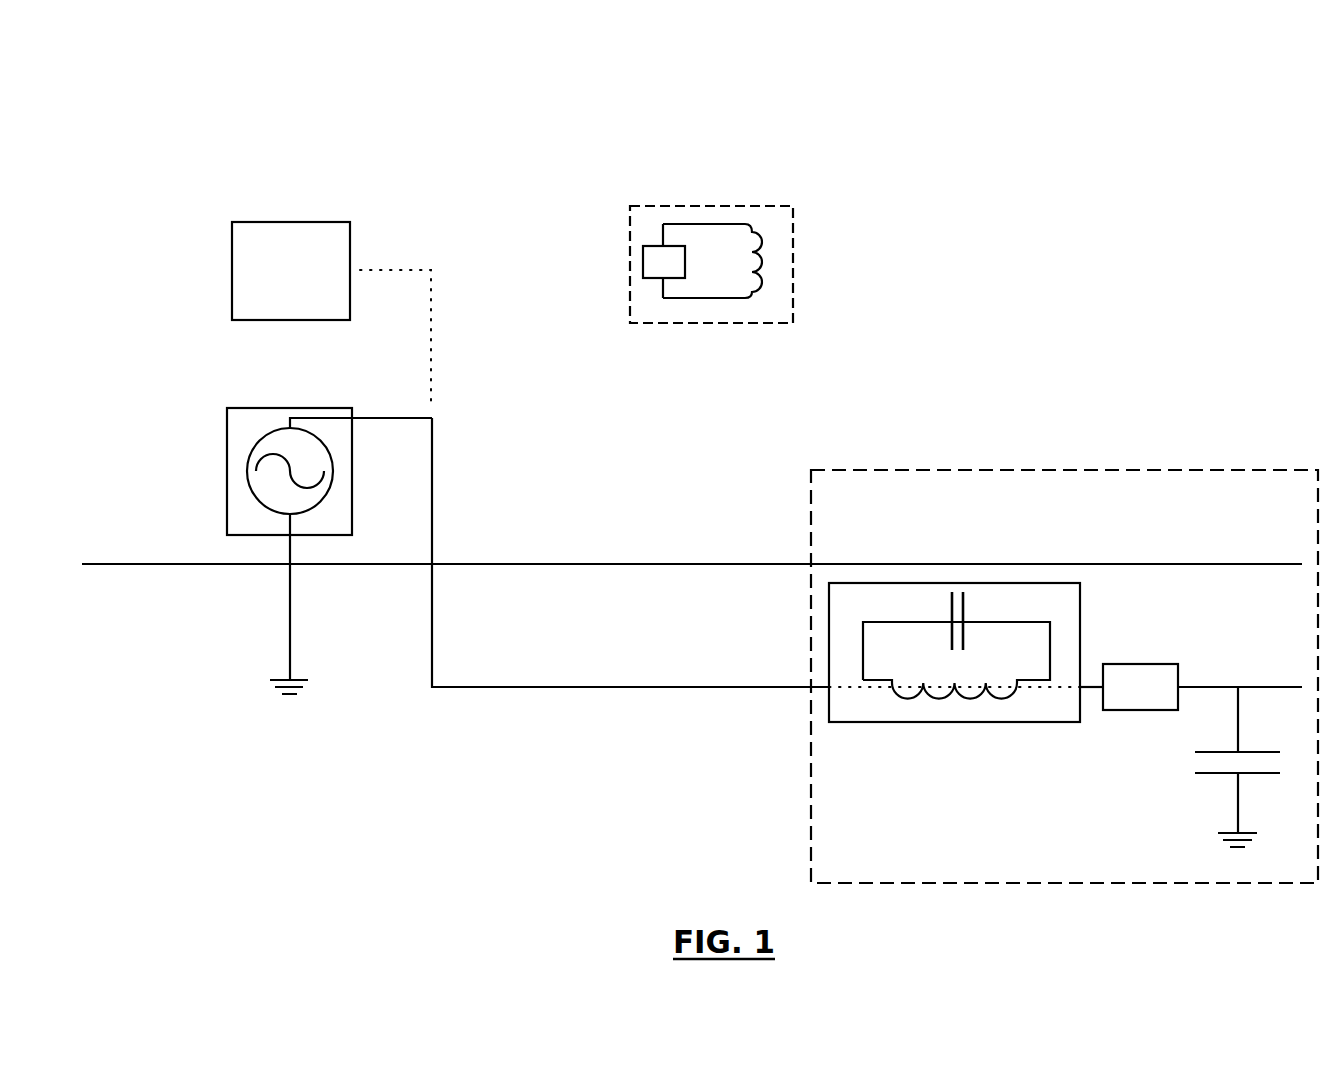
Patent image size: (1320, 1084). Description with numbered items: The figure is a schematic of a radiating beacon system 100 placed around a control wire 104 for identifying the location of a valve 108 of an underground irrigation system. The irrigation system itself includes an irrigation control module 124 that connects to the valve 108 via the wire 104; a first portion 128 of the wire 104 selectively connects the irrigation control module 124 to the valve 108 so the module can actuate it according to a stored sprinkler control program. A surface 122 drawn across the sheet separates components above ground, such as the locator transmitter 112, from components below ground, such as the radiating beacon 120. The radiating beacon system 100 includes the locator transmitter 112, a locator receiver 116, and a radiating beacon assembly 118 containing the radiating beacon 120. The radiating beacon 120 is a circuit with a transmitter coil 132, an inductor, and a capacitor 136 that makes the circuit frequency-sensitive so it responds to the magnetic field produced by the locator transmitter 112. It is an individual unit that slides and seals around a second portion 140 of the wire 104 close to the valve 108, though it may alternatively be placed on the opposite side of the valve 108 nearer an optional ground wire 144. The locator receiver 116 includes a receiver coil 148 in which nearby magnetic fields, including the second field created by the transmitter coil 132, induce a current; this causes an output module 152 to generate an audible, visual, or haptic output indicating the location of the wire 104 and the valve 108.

The radiating beacon system 100 is at (292, 74).
The wire 104 is at (590, 688).
The valve 108 is at (1135, 712).
The locator transmitter 112 is at (235, 407).
The locator receiver 116 is at (713, 232).
The radiating beacon assembly 118 is at (870, 468).
The radiating beacon 120 is at (961, 649).
The surface 122 is at (598, 563).
The irrigation control module 124 is at (328, 222).
The first portion 128 is at (433, 343).
The transmitter coil 132 is at (948, 693).
The capacitor 136 is at (967, 602).
The second portion 140 is at (1030, 692).
The ground wire 144 is at (1240, 720).
The receiver coil 148 is at (758, 242).
The output module 152 is at (643, 250).